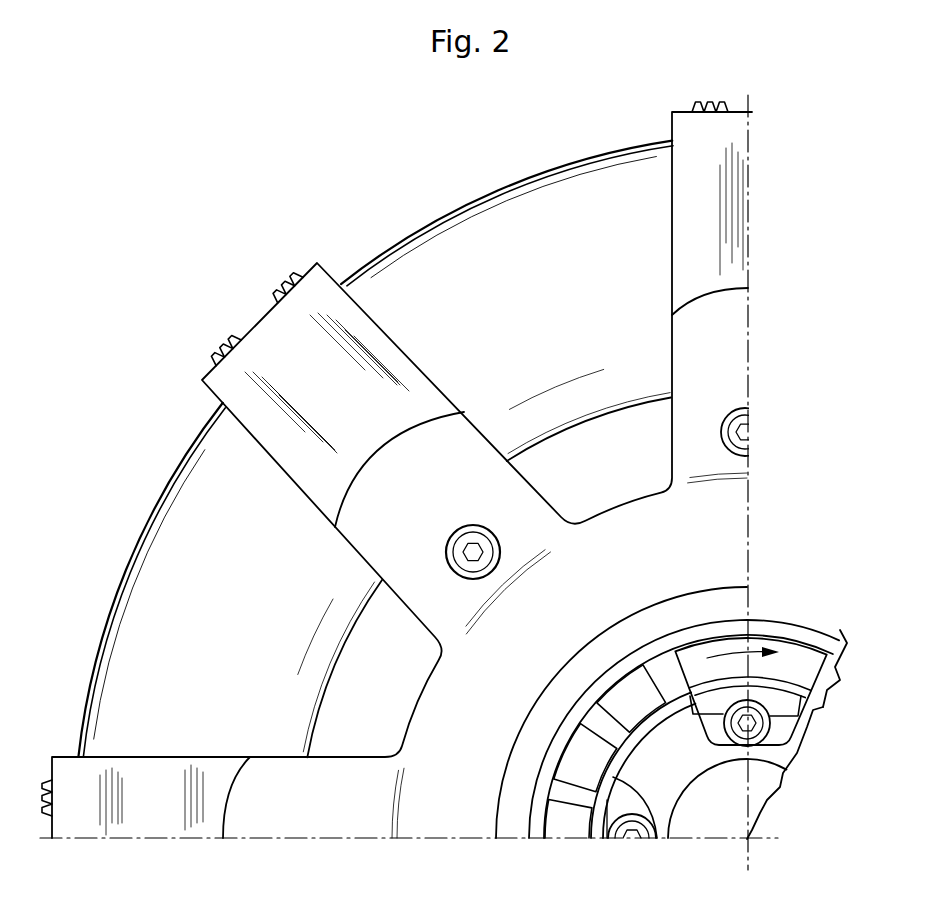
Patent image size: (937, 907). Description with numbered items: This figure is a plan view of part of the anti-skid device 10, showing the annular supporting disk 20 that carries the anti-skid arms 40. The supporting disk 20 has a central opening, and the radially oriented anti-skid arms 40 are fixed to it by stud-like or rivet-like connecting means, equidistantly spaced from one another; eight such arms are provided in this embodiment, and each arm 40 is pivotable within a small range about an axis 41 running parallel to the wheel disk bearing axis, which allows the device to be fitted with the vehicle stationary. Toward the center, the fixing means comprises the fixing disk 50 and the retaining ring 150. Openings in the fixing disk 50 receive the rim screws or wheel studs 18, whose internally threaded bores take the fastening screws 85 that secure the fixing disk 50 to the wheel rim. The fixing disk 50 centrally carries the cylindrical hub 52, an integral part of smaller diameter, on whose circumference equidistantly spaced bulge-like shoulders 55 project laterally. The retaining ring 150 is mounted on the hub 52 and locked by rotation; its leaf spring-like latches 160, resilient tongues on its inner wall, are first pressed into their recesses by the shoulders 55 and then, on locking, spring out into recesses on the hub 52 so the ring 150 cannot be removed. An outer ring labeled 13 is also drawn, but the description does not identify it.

The anti-skid device 10 is at (345, 248).
The outer ring 13 is at (440, 228).
The rim screws or wheel studs 18 is at (760, 702).
The supporting disk 20 is at (733, 520).
The anti-skid arms 40 is at (235, 383).
The axes 41 is at (466, 552).
The fixing disk 50 is at (712, 597).
The hub 52 is at (790, 746).
The bulge-like shoulders 55 is at (672, 738).
The fastening screws 85 is at (745, 706).
The retaining ring 150 is at (842, 648).
The leaf spring-like latches 160 is at (707, 700).